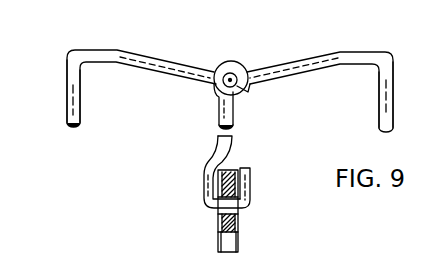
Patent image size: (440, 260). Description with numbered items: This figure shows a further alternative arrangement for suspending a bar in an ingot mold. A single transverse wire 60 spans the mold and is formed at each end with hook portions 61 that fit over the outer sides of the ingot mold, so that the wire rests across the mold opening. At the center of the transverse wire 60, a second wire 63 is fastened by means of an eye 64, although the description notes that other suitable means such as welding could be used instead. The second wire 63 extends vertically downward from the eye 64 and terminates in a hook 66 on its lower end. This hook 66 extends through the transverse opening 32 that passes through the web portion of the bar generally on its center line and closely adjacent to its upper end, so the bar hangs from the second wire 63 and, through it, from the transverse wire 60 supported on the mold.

The transverse wire 60 is at (153, 58).
The hook portions 61 is at (69, 97).
The second wire 63 is at (218, 118).
The eye 64 is at (232, 63).
The hook 66 is at (247, 203).
The transverse opening 32 is at (218, 212).